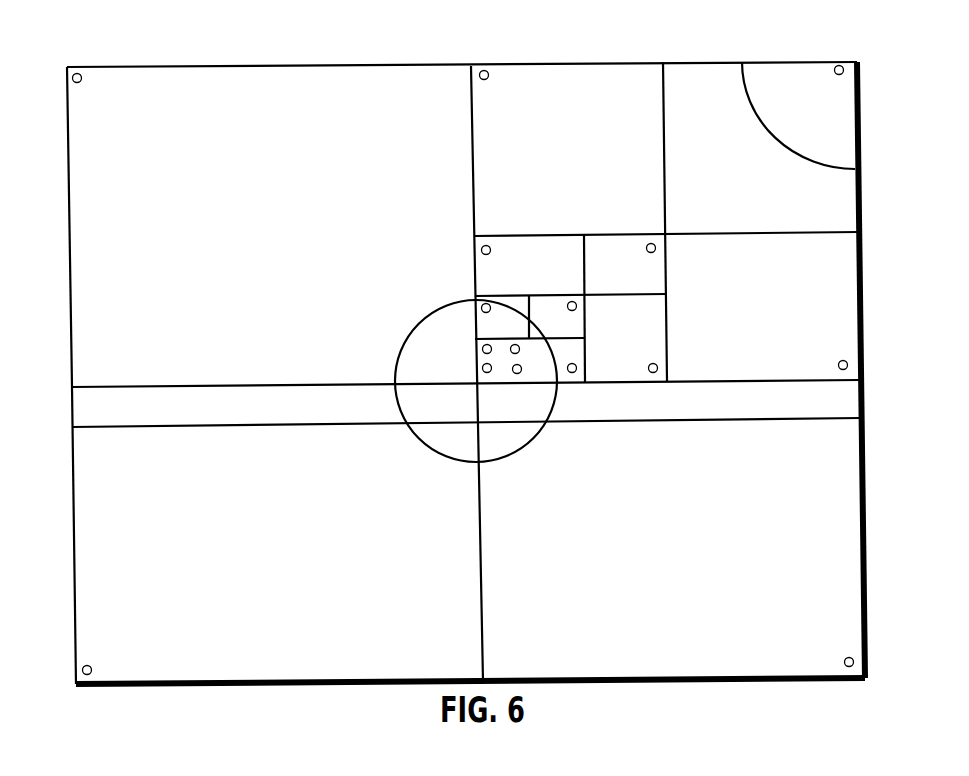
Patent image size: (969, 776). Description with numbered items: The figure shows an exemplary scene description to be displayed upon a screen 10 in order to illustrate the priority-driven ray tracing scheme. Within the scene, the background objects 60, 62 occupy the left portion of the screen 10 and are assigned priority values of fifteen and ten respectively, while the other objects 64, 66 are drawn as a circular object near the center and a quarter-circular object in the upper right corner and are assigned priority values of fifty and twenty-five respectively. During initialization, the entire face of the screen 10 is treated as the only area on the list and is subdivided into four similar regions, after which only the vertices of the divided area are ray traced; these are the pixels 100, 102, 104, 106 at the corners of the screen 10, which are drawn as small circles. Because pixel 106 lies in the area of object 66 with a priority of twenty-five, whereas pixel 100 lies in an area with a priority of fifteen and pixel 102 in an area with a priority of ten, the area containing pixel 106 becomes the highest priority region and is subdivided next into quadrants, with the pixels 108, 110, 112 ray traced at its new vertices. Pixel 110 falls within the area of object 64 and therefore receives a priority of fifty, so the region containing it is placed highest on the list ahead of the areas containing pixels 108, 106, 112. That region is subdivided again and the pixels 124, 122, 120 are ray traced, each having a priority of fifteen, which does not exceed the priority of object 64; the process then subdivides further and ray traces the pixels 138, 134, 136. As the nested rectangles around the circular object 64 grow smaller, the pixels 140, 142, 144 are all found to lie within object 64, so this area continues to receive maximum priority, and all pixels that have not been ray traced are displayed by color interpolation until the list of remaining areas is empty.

The screen 10 is at (210, 64).
The background object 60 is at (82, 148).
The background object 62 is at (88, 488).
The object 64 is at (418, 343).
The object 66 is at (779, 75).
The pixel 100 is at (81, 68).
The pixel 102 is at (78, 670).
The pixel 104 is at (852, 658).
The pixel 106 is at (847, 63).
The pixel 108 is at (488, 66).
The pixel 110 is at (481, 368).
The pixel 112 is at (846, 361).
The pixel 120 is at (658, 363).
The pixel 122 is at (652, 242).
The pixel 124 is at (482, 243).
The pixel 134 is at (573, 300).
The pixel 136 is at (571, 373).
The pixel 138 is at (481, 309).
The pixel 140 is at (482, 350).
The pixel 142 is at (512, 353).
The pixel 144 is at (520, 373).